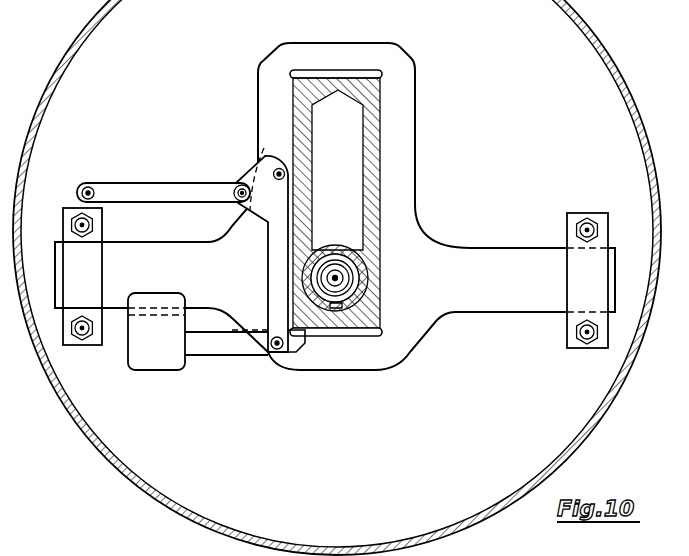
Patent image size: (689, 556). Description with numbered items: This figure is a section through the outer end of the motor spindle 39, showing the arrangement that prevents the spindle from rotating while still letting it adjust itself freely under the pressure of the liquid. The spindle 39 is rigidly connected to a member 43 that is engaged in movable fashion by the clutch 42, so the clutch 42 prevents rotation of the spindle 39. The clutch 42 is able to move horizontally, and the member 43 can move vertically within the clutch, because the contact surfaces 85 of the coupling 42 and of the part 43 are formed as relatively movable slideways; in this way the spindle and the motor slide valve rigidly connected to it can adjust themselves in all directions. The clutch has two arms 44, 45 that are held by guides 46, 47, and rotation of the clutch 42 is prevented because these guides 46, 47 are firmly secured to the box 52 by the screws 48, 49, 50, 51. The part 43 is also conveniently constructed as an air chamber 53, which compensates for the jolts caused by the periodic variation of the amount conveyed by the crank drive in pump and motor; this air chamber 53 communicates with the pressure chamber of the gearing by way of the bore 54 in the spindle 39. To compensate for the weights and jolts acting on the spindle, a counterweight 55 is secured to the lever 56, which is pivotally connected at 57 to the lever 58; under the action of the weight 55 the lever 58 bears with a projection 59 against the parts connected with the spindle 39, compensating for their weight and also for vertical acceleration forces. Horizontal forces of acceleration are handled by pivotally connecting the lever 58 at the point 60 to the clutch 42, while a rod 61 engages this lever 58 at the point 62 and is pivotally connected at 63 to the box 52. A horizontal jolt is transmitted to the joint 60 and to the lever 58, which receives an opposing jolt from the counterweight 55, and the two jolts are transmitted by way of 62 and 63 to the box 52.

The spindle 39 is at (358, 262).
The clutch 42 is at (393, 90).
The member 43 is at (362, 77).
The arm 44 is at (482, 288).
The arm 45 is at (202, 268).
The guide 46 is at (581, 315).
The guide 47 is at (90, 345).
The screw 48 is at (586, 230).
The screw 49 is at (586, 332).
The screw 50 is at (80, 212).
The screw 51 is at (83, 338).
The box 52 is at (118, 462).
The air chamber 53 is at (338, 138).
The bore 54 is at (368, 283).
The counterweight 55 is at (160, 333).
The lever 56 is at (227, 343).
The pivot 57 is at (281, 348).
The lever 58 is at (282, 267).
The projection 59 is at (297, 343).
The pivot point 60 is at (275, 170).
The rod 61 is at (145, 192).
The engagement point 62 is at (238, 188).
The pivot 63 is at (90, 188).
The contact surfaces 85 is at (392, 174).